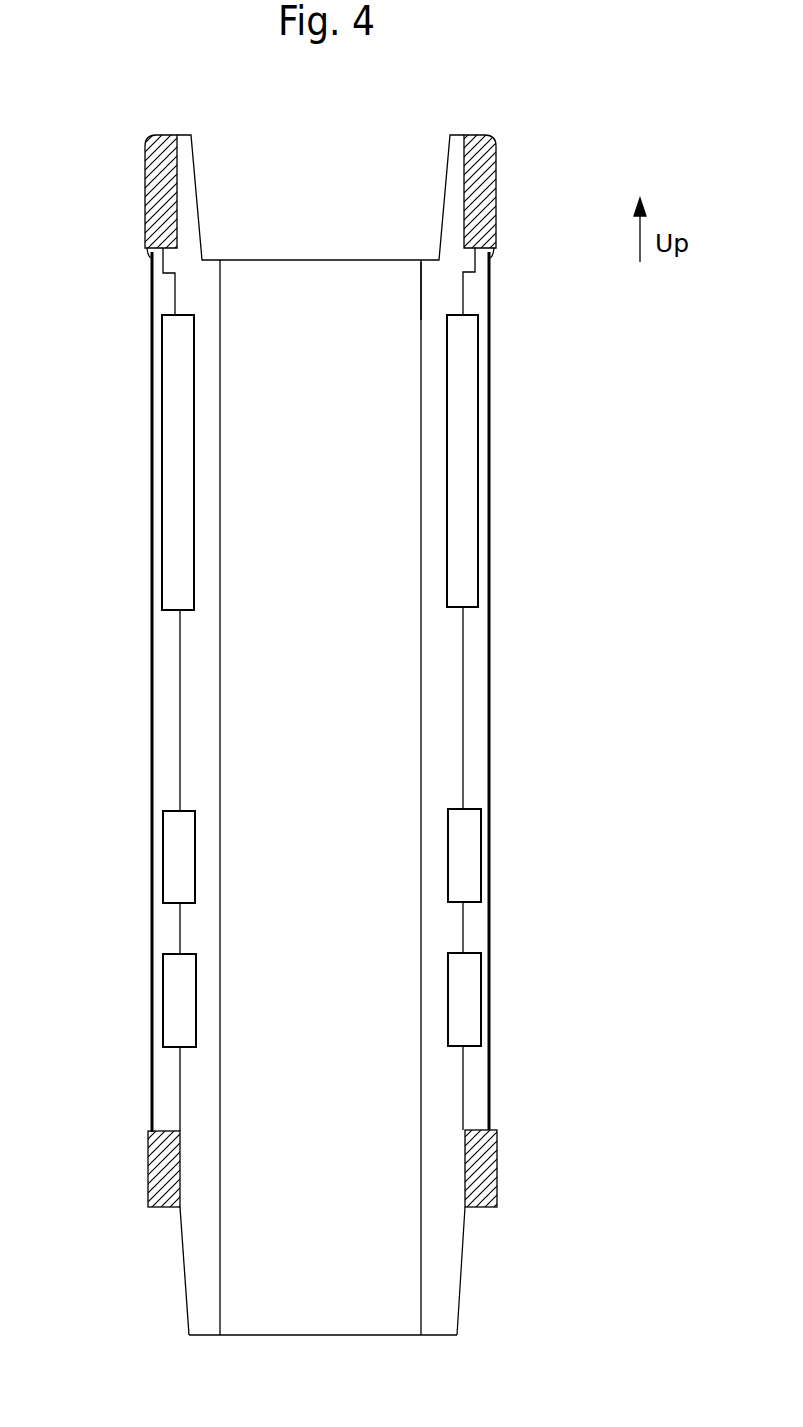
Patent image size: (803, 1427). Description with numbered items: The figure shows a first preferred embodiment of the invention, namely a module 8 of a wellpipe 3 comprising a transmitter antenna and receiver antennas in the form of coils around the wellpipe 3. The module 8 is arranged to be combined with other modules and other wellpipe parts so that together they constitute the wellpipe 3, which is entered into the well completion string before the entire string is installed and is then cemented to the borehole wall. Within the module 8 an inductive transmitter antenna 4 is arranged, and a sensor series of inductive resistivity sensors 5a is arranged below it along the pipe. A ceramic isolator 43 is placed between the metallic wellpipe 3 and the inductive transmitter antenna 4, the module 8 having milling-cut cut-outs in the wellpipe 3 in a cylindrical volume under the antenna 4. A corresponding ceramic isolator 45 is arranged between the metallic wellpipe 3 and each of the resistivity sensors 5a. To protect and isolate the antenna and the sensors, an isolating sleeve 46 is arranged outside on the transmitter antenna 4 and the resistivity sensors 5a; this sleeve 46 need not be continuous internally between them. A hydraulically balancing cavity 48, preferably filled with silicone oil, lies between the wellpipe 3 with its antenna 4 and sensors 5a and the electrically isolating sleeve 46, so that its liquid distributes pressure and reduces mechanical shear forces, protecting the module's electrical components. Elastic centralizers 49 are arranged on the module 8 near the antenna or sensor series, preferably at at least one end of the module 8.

The module 8 is at (122, 515).
The elastic centralizer 49 is at (147, 200).
The inductive transmitter antenna 4 is at (480, 410).
The isolating sleeve 46 is at (490, 1085).
The wellpipe 3 is at (450, 293).
The ceramic isolator 43 is at (467, 533).
The hydraulically balancing cavity 48 is at (475, 710).
The ceramic isolator 45 is at (468, 828).
The inductive resistivity sensor 5a is at (468, 877).